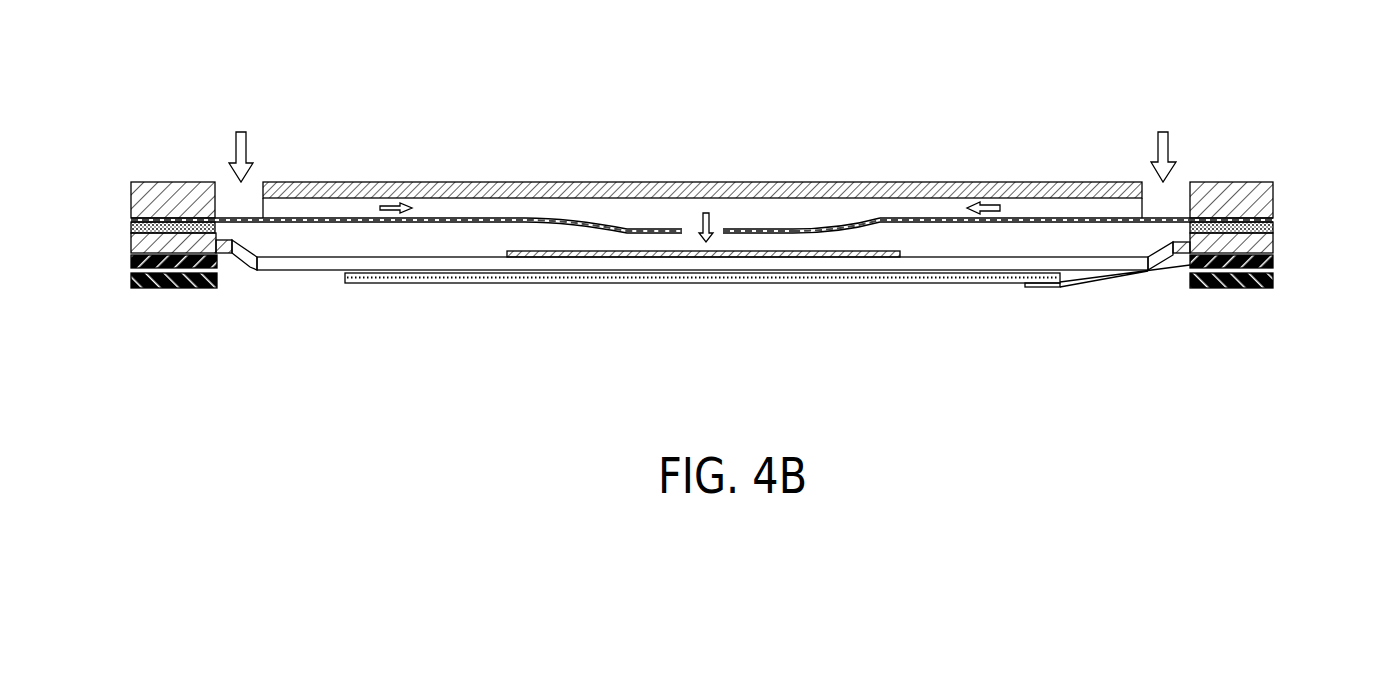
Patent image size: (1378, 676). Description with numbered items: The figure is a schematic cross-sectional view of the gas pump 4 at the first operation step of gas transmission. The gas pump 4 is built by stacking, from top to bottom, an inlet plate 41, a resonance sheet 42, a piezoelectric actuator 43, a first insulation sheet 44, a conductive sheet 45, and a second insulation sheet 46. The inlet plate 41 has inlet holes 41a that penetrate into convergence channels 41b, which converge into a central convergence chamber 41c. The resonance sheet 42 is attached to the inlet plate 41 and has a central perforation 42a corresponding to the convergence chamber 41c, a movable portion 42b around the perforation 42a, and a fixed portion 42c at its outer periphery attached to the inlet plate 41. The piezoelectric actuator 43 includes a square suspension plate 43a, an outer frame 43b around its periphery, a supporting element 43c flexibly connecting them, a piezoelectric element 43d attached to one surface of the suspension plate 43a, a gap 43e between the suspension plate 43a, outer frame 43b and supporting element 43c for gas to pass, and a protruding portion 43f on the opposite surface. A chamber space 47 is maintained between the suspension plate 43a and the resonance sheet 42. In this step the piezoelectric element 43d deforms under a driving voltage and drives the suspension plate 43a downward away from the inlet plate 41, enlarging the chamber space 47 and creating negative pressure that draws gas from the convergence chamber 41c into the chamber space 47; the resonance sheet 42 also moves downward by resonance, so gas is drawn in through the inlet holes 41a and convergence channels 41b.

The gas pump 4 is at (704, 27).
The inlet plate 41 is at (1228, 205).
The inlet hole 41a is at (256, 182).
The convergence channel 41b is at (385, 182).
The convergence chamber 41c is at (683, 212).
The resonance sheet 42 is at (727, 156).
The perforation 42a is at (723, 231).
The movable portion 42b is at (807, 228).
The fixed portion 42c is at (1076, 179).
The piezoelectric actuator 43 is at (718, 339).
The suspension plate 43a is at (345, 263).
The outer frame 43b is at (145, 288).
The supporting element 43c is at (233, 252).
The piezoelectric element 43d is at (702, 312).
The gap 43e is at (248, 266).
The protruding portion 43f is at (525, 253).
The first insulation sheet 44 is at (1247, 288).
The conductive sheet 45 is at (1264, 269).
The second insulation sheet 46 is at (1197, 289).
The chamber space 47 is at (427, 230).